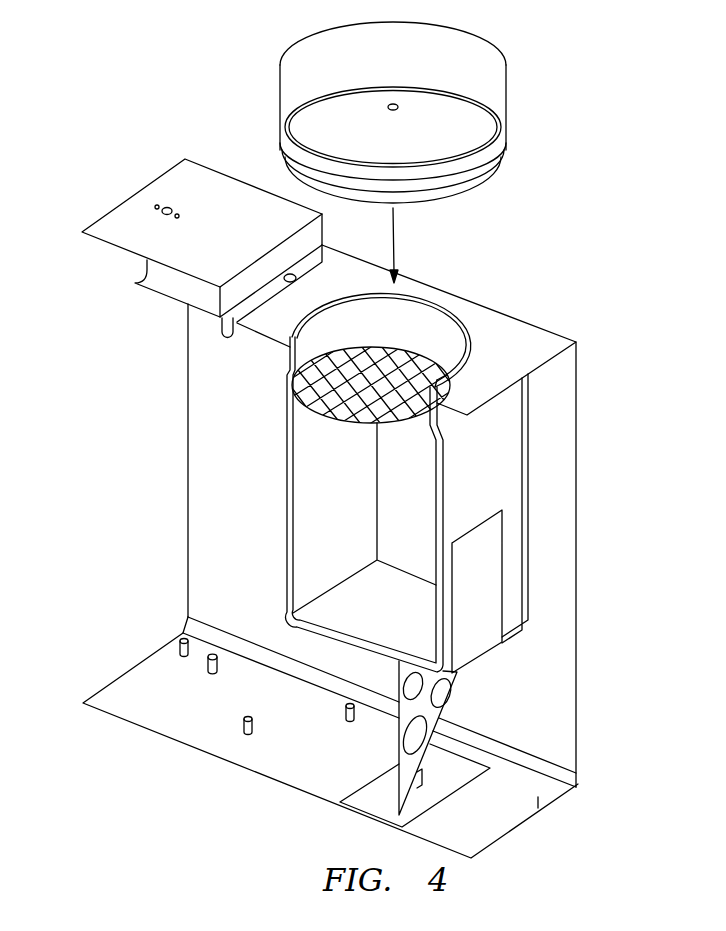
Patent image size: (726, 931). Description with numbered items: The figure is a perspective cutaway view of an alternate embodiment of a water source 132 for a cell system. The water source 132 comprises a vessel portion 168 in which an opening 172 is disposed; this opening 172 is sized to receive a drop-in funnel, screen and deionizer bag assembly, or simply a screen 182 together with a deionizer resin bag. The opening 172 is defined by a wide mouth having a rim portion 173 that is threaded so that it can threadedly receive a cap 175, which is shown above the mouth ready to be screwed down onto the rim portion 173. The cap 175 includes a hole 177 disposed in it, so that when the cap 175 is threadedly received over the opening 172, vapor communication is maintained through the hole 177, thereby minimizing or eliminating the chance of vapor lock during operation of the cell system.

The water source 132 is at (614, 209).
The vessel portion 168 is at (531, 476).
The opening 172 is at (320, 342).
The rim portion 173 is at (467, 327).
The cap 175 is at (498, 49).
The hole 177 is at (396, 103).
The screen 182 is at (328, 395).